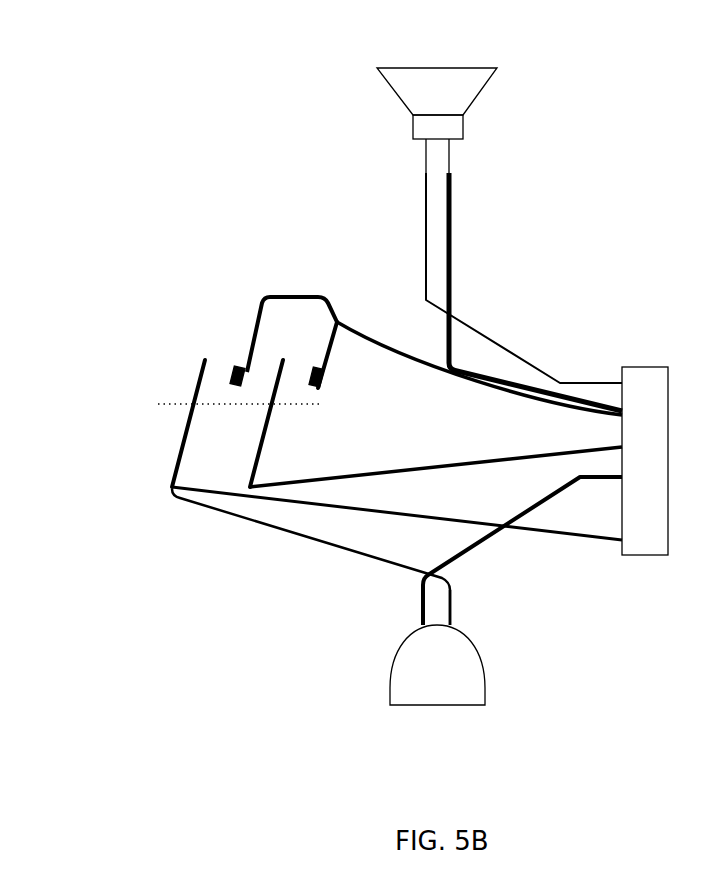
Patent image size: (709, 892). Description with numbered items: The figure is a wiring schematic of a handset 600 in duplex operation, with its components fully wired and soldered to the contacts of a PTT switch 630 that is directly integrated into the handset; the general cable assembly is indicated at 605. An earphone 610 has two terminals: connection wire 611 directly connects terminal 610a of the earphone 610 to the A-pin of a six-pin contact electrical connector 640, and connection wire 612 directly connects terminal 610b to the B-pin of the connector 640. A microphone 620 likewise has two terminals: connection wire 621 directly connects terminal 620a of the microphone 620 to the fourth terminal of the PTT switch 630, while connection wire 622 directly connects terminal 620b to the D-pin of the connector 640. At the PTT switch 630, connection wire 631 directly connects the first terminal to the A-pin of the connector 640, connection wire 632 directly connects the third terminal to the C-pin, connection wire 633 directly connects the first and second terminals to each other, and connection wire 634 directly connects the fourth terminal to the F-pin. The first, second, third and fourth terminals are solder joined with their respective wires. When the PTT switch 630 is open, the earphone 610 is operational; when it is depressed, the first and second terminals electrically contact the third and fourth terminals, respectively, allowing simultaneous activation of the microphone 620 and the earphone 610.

The handset 600 is at (127, 80).
The cable assembly 605 is at (218, 187).
The earphone 610 is at (437, 78).
The terminal of earphone 610a is at (482, 156).
The terminal of earphone 610b is at (395, 154).
The connection wire 611 is at (535, 292).
The connection wire 612 is at (497, 278).
The microphone 620 is at (437, 692).
The terminal of microphone 620a is at (479, 613).
The terminal of microphone 620b is at (389, 611).
The connection wire 621 is at (311, 557).
The connection wire 622 is at (522, 550).
The PTT switch 630 is at (205, 404).
The connection wire 631 is at (479, 368).
The connection wire 632 is at (436, 460).
The connection wire 633 is at (292, 318).
The connection wire 634 is at (397, 530).
The 6-pin contact electrical connector 640 is at (629, 432).